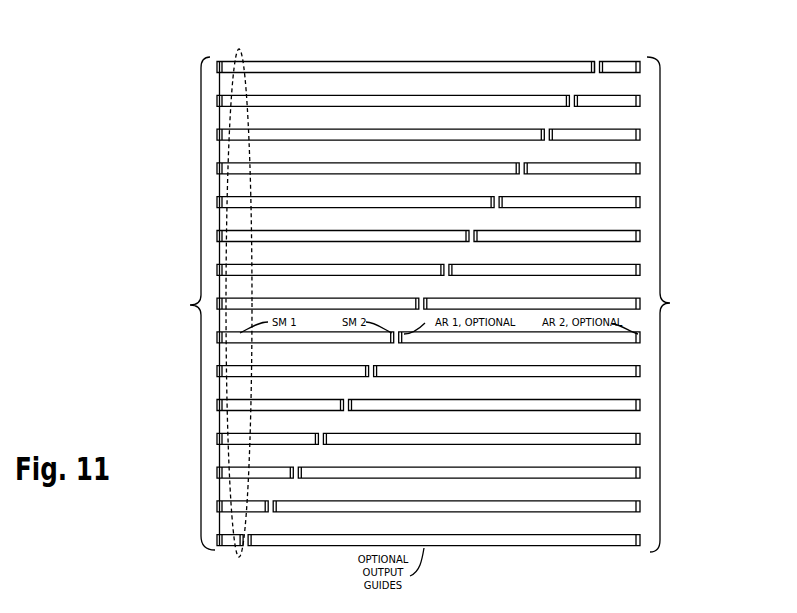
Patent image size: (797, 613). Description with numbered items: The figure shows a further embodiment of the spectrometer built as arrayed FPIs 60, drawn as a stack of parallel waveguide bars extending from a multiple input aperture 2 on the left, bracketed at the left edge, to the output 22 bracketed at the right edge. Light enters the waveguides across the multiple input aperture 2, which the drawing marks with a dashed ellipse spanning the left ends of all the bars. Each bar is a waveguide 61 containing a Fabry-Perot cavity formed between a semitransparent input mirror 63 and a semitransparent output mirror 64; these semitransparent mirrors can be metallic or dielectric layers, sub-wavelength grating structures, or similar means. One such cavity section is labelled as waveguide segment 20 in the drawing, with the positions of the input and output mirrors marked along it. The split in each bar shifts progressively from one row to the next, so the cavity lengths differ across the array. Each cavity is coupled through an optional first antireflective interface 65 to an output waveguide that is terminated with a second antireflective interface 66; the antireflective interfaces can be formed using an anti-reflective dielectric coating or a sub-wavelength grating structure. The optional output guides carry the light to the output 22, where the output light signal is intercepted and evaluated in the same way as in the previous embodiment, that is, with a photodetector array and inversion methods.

The multiple input aperture 2 is at (200, 358).
The output 22 is at (661, 269).
The single-mode waveguide section 20 is at (428, 339).
The arrayed FPIs 60 is at (306, 62).
The optical waveguide 61 is at (378, 104).
The semitransparent input mirror SM1 63 is at (211, 109).
The output mirror SM2 64 is at (593, 62).
The first antireflective interface AR1 65 is at (601, 63).
The second antireflective interface 66 is at (637, 135).